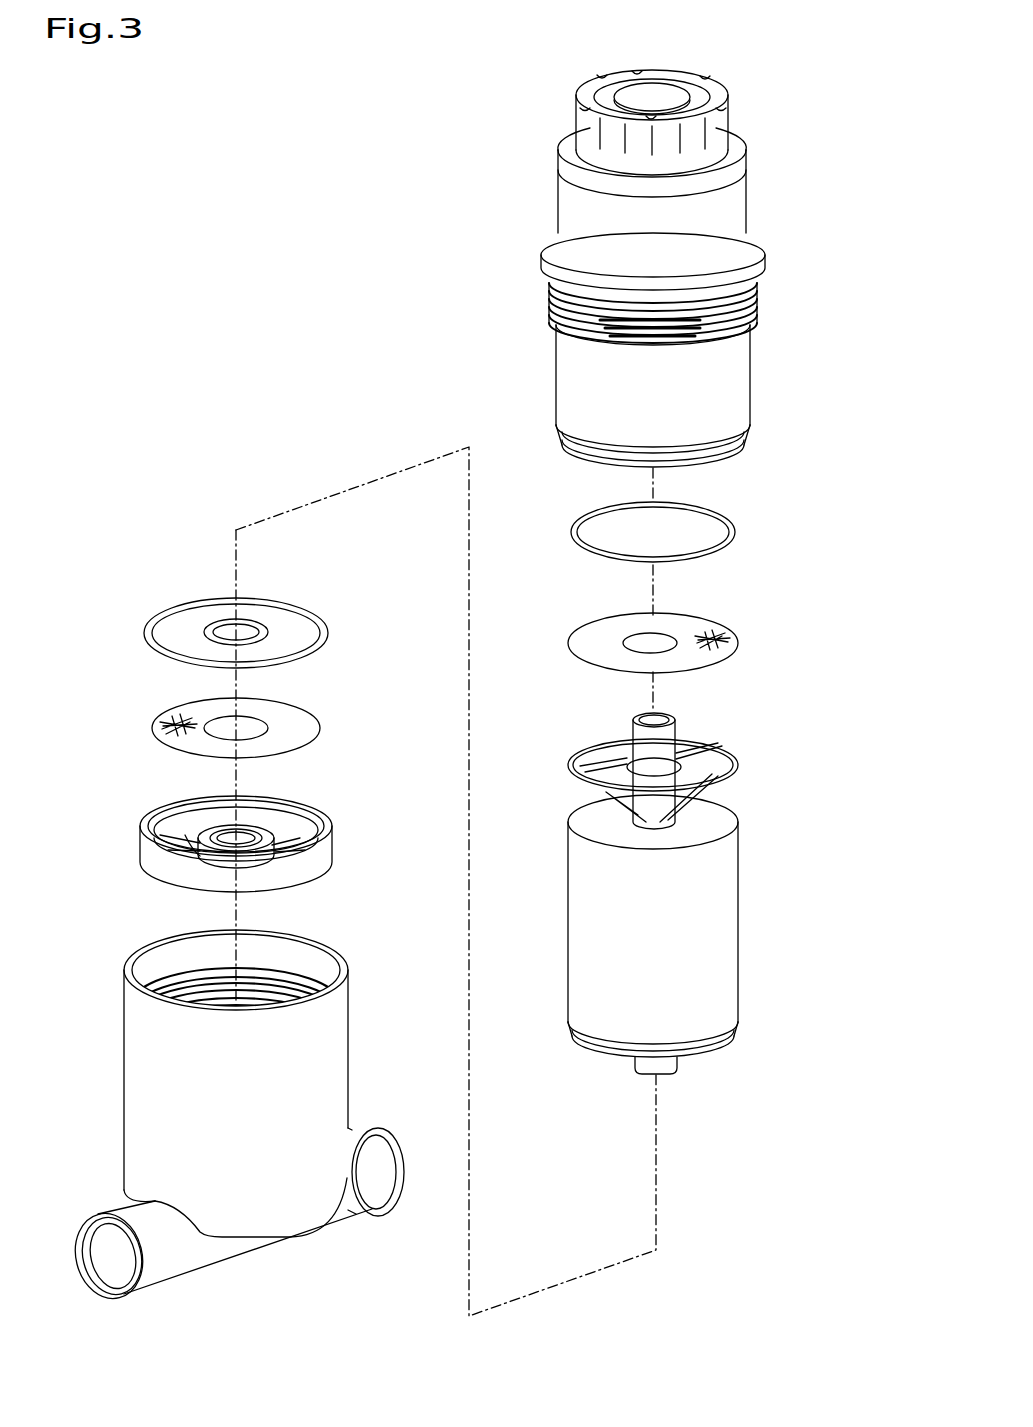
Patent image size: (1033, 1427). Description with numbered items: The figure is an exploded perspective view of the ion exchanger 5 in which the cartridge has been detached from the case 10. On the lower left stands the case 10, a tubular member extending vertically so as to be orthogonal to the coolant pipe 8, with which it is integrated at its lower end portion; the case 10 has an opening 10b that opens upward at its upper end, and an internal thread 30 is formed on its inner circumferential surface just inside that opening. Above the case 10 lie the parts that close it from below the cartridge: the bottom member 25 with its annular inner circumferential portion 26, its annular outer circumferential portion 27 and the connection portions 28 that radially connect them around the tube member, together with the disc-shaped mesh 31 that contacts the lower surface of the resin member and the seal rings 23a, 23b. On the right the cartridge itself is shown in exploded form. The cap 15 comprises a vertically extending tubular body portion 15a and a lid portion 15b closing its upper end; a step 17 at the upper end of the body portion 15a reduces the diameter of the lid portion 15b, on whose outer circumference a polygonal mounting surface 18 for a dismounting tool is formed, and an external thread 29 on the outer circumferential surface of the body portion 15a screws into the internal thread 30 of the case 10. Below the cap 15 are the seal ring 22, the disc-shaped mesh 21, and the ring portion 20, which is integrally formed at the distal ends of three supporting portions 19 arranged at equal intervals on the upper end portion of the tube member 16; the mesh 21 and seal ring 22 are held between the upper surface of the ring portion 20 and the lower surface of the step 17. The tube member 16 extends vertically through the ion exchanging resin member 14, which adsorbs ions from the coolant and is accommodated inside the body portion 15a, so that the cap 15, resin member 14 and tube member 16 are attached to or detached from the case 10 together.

The ion exchanger 5 is at (273, 258).
The coolant pipe 8 is at (122, 1207).
The case 10 is at (350, 1050).
The opening 10b is at (320, 956).
The ion exchanging resin member 14 is at (742, 915).
The cap 15 is at (550, 155).
The body portion 15a is at (752, 360).
The lid portion 15b is at (650, 95).
The tube member 16 is at (680, 1062).
The step 17 is at (740, 135).
The polygonal mounting surface 18 is at (580, 122).
The supporting portions 19 is at (600, 762).
The ring portion 20 is at (735, 750).
The mesh 21 is at (737, 632).
The seal ring 22 is at (735, 520).
The seal ring 23a is at (222, 622).
The seal ring 23b is at (325, 618).
The bottom member 25 is at (343, 855).
The inner circumferential portion 26 is at (212, 826).
The outer circumferential portion 27 is at (316, 810).
The connection portion 28 is at (160, 818).
The external thread 29 is at (757, 290).
The internal thread 30 is at (165, 975).
The mesh 31 is at (318, 718).